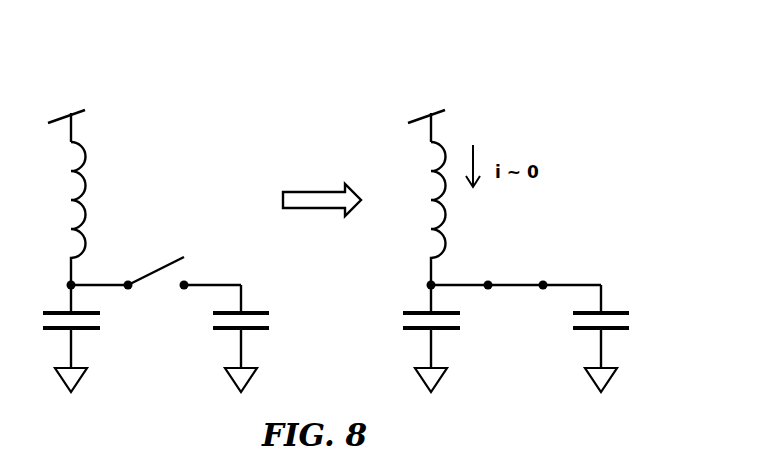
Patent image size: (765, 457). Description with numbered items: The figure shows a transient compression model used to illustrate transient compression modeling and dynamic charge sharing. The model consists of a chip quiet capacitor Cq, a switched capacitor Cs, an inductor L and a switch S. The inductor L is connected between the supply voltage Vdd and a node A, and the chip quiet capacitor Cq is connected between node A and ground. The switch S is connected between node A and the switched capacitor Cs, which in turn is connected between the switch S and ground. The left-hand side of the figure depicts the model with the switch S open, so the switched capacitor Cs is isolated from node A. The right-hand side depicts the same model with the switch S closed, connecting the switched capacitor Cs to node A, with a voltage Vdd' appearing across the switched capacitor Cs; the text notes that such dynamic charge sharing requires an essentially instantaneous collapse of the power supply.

The supply voltage Vdd is at (245, 117).
The inductor L is at (237, 213).
The node A is at (239, 289).
The switch S is at (336, 265).
The chip quiet capacitor Cq is at (271, 338).
The switched capacitor Cs is at (441, 338).
The voltage across capacitor Cs Vdd' is at (615, 261).